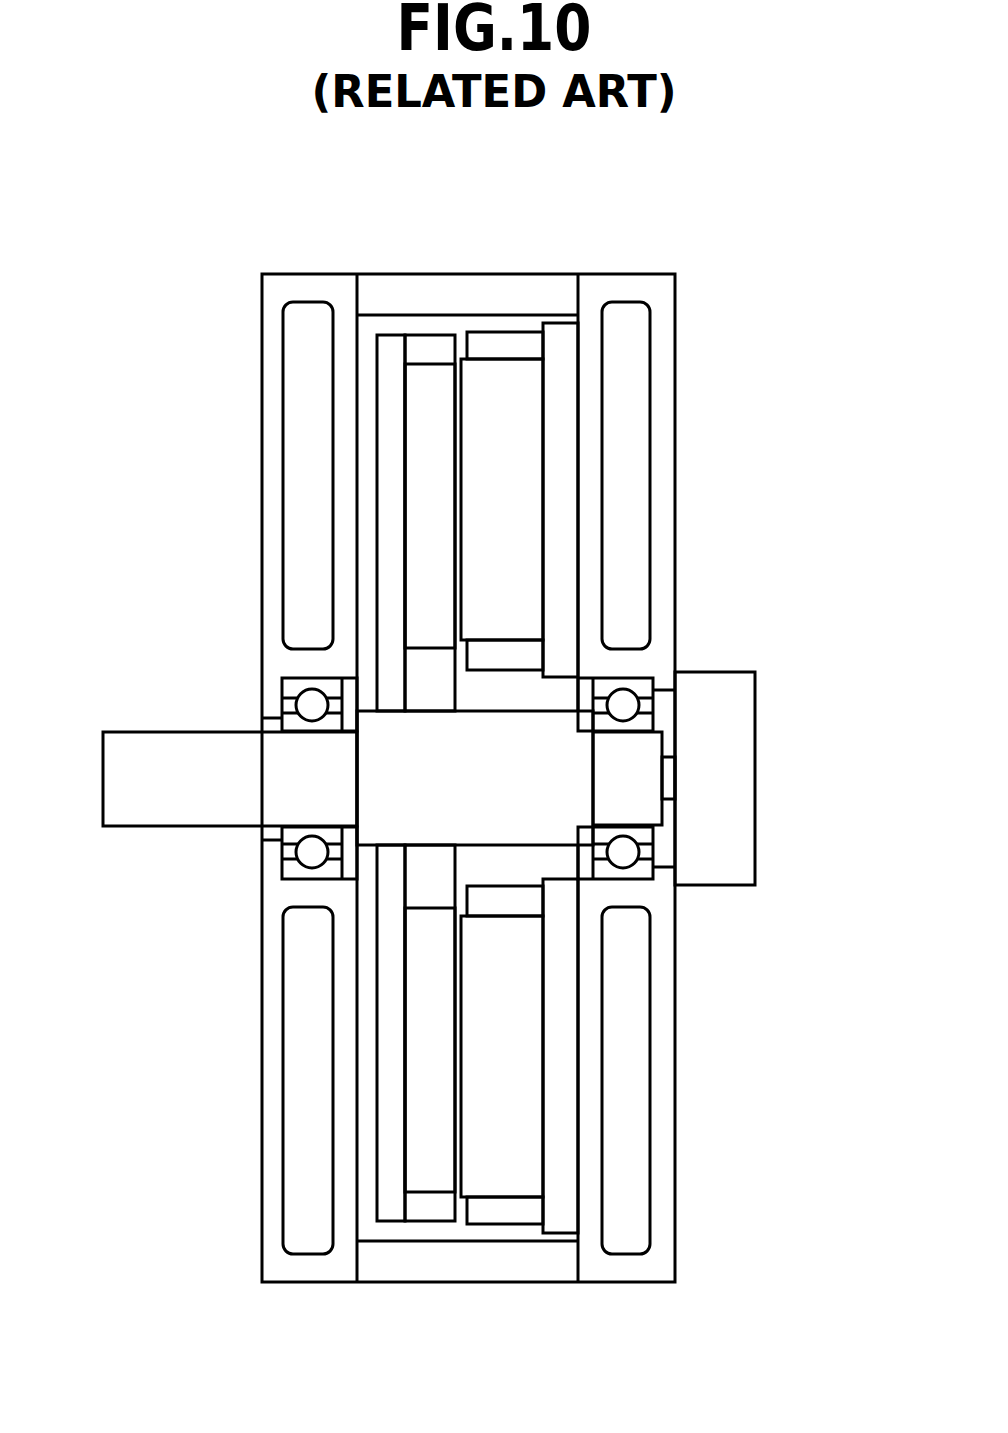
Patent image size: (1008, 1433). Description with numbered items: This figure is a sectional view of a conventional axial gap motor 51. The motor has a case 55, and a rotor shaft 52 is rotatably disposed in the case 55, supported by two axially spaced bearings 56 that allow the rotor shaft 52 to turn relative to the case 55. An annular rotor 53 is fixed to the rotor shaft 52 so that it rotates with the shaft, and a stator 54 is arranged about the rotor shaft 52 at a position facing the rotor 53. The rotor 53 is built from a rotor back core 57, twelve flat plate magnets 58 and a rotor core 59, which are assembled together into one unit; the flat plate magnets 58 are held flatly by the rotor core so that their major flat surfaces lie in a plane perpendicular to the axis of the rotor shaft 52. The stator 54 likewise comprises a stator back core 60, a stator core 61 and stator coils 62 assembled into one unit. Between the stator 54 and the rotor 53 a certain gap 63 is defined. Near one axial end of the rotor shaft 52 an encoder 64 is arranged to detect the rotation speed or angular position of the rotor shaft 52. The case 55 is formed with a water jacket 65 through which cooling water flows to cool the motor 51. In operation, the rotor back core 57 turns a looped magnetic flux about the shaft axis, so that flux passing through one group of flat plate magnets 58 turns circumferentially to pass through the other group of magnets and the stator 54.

The axial gap motor 51 is at (214, 378).
The rotor shaft 52 is at (512, 823).
The rotor 53 is at (626, 778).
The stator 54 is at (654, 771).
The case 55 is at (480, 1262).
The bearings 56 is at (288, 686).
The rotor back core 57 is at (392, 503).
The flat plate magnets 58 is at (430, 1033).
The rotor core 59 is at (425, 885).
The stator back core 60 is at (565, 463).
The stator core 61 is at (515, 407).
The stator coils 62 is at (515, 347).
The gap 63 is at (461, 333).
The encoder 64 is at (725, 742).
The water jacket 65 is at (300, 1003).